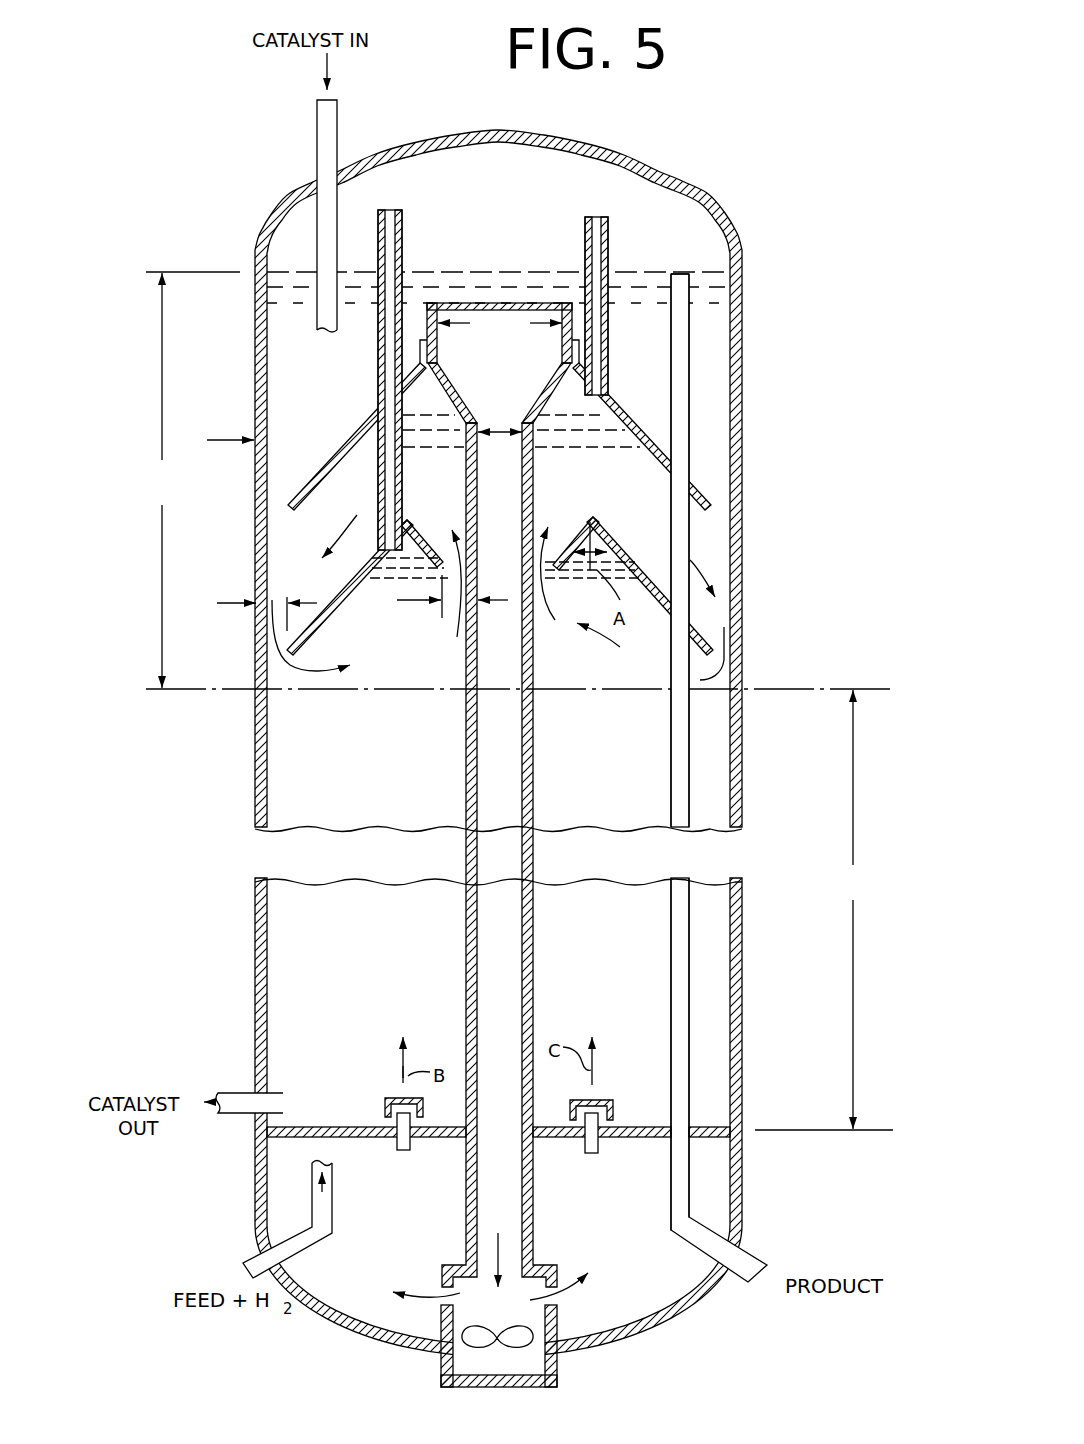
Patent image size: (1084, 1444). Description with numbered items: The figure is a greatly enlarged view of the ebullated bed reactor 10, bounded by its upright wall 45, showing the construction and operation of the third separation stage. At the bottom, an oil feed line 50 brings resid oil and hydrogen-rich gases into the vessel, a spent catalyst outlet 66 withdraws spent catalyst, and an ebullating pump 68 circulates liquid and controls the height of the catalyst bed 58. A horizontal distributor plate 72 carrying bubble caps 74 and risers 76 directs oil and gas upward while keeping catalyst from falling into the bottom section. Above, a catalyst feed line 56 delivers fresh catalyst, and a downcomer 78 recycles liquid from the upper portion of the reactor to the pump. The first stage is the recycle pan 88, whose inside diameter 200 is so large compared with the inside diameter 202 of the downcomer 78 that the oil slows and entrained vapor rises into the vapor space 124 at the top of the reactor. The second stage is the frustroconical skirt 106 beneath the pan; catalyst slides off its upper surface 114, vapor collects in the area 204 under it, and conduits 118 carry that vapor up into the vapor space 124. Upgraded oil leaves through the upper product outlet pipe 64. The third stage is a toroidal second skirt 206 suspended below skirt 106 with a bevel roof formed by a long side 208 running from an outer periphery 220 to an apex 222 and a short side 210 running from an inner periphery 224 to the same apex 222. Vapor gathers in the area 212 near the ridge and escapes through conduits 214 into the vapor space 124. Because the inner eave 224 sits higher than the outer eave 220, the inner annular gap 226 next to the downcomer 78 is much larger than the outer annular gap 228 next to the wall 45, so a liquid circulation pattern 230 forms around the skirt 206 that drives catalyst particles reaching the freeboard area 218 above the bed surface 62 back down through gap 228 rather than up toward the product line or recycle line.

The ebullated bed reactor 10 is at (561, 743).
The upright wall 45 is at (743, 543).
The oil feed line 50 is at (257, 1250).
The catalyst feed line 56 is at (315, 231).
The catalyst bed 58 is at (824, 910).
The expanded catalyst bed level 62 is at (711, 699).
The upper product outlet pipe 64 is at (689, 375).
The spent catalyst outlet 66 is at (237, 1113).
The ebullating pump 68 is at (555, 1360).
The distributor plate 72 is at (363, 1138).
The bubble caps 74 is at (385, 1108).
The risers 76 is at (405, 1152).
The downcomer 78 is at (477, 693).
The recycle pan 88 is at (464, 303).
The frustroconical skirt 106 is at (340, 423).
The upper surface of the skirt 114 is at (643, 432).
The conduits 118 is at (595, 217).
The vapor space 124 is at (503, 201).
The inside diameter of the pan 200 is at (500, 324).
The inside diameter of the downcomer 202 is at (503, 428).
The area under skirt 204 is at (417, 402).
The second skirt 206 is at (363, 592).
The long side 208 is at (337, 603).
The short side 210 is at (422, 538).
The area near the ridge 212 is at (423, 537).
The conduits 214 is at (402, 213).
The freeboard area 218 is at (193, 480).
The outer periphery 220 is at (287, 652).
The apex 222 is at (407, 518).
The inner periphery 224 is at (437, 592).
The inner annular gap 226 is at (478, 641).
The outer annular gap 228 is at (270, 606).
The liquid circulation pattern 230 is at (333, 644).